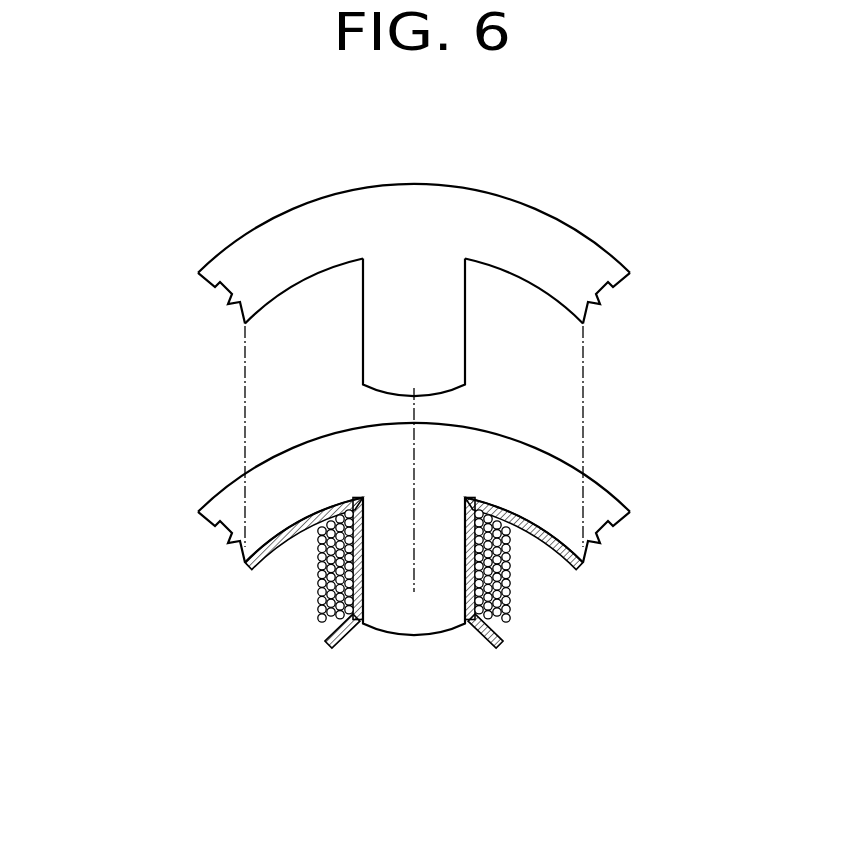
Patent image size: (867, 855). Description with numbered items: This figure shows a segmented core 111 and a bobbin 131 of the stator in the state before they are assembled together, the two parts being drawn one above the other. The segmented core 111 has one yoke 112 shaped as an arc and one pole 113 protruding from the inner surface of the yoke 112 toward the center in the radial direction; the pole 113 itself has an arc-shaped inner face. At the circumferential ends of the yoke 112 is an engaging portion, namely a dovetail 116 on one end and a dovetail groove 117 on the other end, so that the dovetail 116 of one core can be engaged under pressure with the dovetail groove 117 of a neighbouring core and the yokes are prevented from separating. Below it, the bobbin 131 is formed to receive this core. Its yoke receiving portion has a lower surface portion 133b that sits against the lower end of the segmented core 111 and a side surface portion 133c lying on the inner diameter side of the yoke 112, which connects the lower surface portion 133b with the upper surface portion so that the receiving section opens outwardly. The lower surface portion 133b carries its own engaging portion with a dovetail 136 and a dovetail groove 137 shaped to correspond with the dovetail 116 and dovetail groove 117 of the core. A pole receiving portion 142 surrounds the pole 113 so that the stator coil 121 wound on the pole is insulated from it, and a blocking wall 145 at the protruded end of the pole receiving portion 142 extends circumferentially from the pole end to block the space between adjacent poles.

The segmented core 111 is at (190, 208).
The yoke 112 is at (548, 227).
The pole 113 is at (460, 358).
The dovetail 116 is at (618, 303).
The dovetail groove 117 is at (220, 292).
The bobbin 131 is at (190, 455).
The lower surface portion 133b is at (597, 498).
The side surface portion 133c is at (552, 558).
The dovetail 136 is at (618, 540).
The dovetail groove 137 is at (222, 531).
The pole receiving portion 142 is at (463, 586).
The blocking wall 145 is at (482, 633).
The stator coil 121 is at (503, 622).